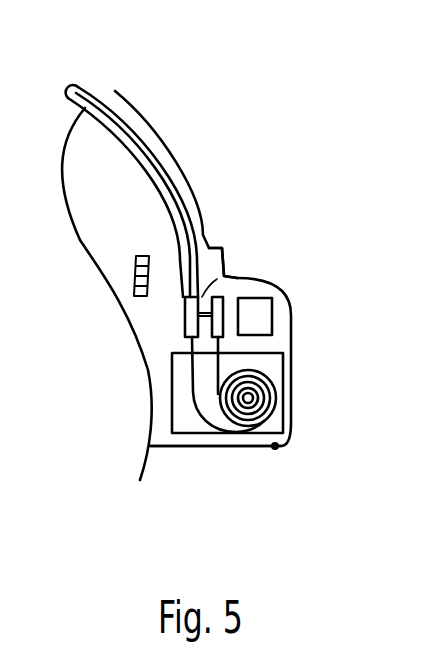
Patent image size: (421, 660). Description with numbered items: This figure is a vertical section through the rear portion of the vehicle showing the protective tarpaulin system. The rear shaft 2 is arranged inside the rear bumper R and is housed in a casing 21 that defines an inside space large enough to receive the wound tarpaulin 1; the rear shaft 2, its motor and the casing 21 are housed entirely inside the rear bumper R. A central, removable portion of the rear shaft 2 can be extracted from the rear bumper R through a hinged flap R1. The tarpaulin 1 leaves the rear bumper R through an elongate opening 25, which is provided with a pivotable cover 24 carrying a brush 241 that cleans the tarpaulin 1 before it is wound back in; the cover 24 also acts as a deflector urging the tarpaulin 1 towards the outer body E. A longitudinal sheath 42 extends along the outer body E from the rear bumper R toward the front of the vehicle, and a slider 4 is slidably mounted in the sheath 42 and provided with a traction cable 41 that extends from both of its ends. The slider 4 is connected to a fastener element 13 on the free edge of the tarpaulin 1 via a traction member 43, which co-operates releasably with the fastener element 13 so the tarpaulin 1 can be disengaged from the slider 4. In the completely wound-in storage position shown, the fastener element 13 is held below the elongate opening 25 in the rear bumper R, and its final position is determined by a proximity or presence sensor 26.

The tarpaulin 1 is at (207, 367).
The rear shaft 2 is at (248, 399).
The slider 4 is at (207, 244).
The fastener element 13 is at (211, 247).
The casing 21 is at (291, 371).
The pivotable cover 24 is at (228, 263).
The elongate opening 25 is at (185, 298).
The proximity or presence sensor 26 is at (258, 312).
The traction cable 41 is at (147, 165).
The longitudinal sheath 42 is at (127, 133).
The traction member 43 is at (204, 340).
The brush 241 is at (222, 250).
The outer body E is at (197, 196).
The rear bumper R is at (228, 448).
The hinged flap R1 is at (291, 421).